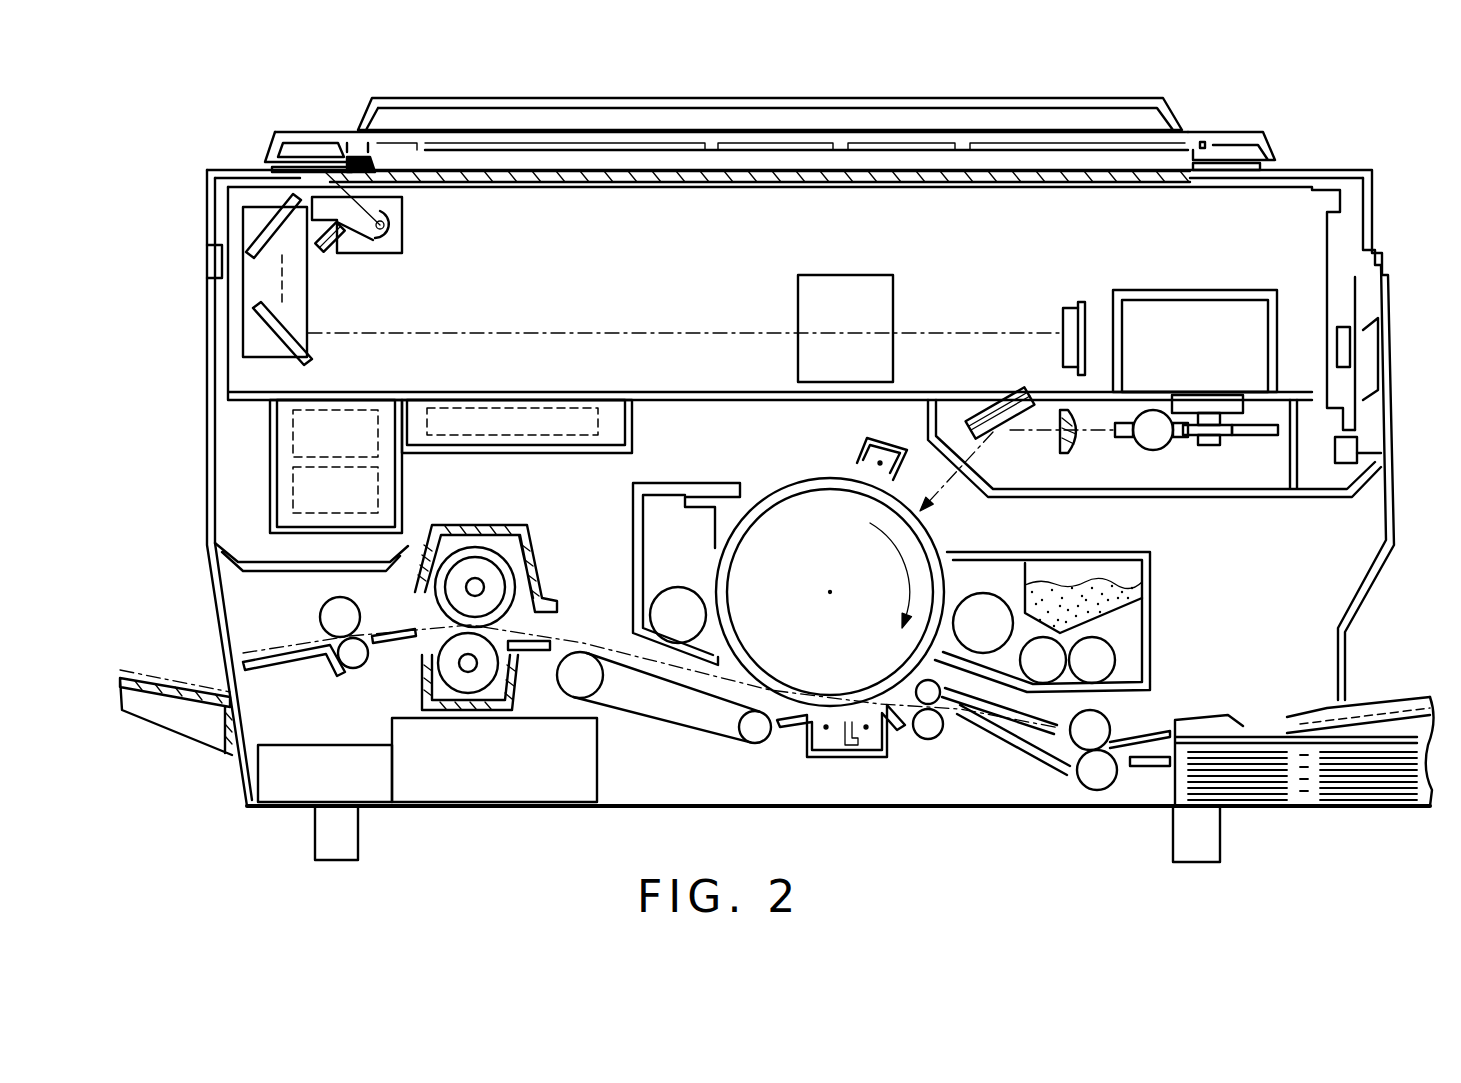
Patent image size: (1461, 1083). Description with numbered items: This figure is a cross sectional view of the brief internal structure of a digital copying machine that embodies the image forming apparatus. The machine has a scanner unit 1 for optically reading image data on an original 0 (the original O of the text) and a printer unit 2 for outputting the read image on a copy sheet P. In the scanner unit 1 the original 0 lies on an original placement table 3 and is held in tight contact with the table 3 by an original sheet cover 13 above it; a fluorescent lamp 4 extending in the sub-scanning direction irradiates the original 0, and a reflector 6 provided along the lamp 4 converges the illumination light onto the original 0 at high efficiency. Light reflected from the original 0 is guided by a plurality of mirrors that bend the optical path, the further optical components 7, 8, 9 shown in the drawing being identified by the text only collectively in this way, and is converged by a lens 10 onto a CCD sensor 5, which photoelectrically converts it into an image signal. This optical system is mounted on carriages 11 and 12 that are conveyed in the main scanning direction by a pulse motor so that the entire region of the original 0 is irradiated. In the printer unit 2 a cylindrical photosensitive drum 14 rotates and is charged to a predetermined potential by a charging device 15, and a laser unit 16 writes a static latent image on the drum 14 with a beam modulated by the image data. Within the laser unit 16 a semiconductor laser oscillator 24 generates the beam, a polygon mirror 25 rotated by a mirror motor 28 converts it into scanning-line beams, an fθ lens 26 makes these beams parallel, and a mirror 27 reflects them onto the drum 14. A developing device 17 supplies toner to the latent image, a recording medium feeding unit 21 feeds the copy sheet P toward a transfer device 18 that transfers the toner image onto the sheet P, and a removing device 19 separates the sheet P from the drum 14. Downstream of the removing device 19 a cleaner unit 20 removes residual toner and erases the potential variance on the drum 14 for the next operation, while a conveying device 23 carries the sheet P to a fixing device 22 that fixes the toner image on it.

The original 0 is at (590, 170).
The scanner unit 1 is at (224, 165).
The printer unit 2 is at (885, 825).
The original placement table 3 is at (707, 188).
The fluorescent lamp 4 is at (378, 220).
The CCD sensor 5 is at (1075, 306).
The reflector 6 is at (400, 249).
The lamp 7 is at (334, 250).
The first mirror 8 is at (243, 230).
The second mirror 9 is at (258, 328).
The lens 10 is at (842, 276).
The carriage 11 is at (405, 220).
The carriage 12 is at (310, 305).
The original sheet cover 13 is at (1176, 107).
The photosensitive drum 14 is at (771, 482).
The charging device 15 is at (866, 441).
The laser unit 16 is at (1250, 508).
The developing device 17 is at (1152, 638).
The transfer device 18 is at (888, 750).
The removing device 19 is at (820, 750).
The cleaner unit 20 is at (632, 524).
The recording medium feeding unit 21 is at (1410, 700).
The fixing device 22 is at (542, 580).
The conveying device 23 is at (644, 708).
The semiconductor laser oscillator 24 is at (1153, 447).
The polygon mirror 25 is at (1258, 437).
The fθ lens 26 is at (1077, 443).
The mirror 27 is at (1006, 434).
The mirror motor 28 is at (1213, 385).
The copy sheet P is at (1368, 760).